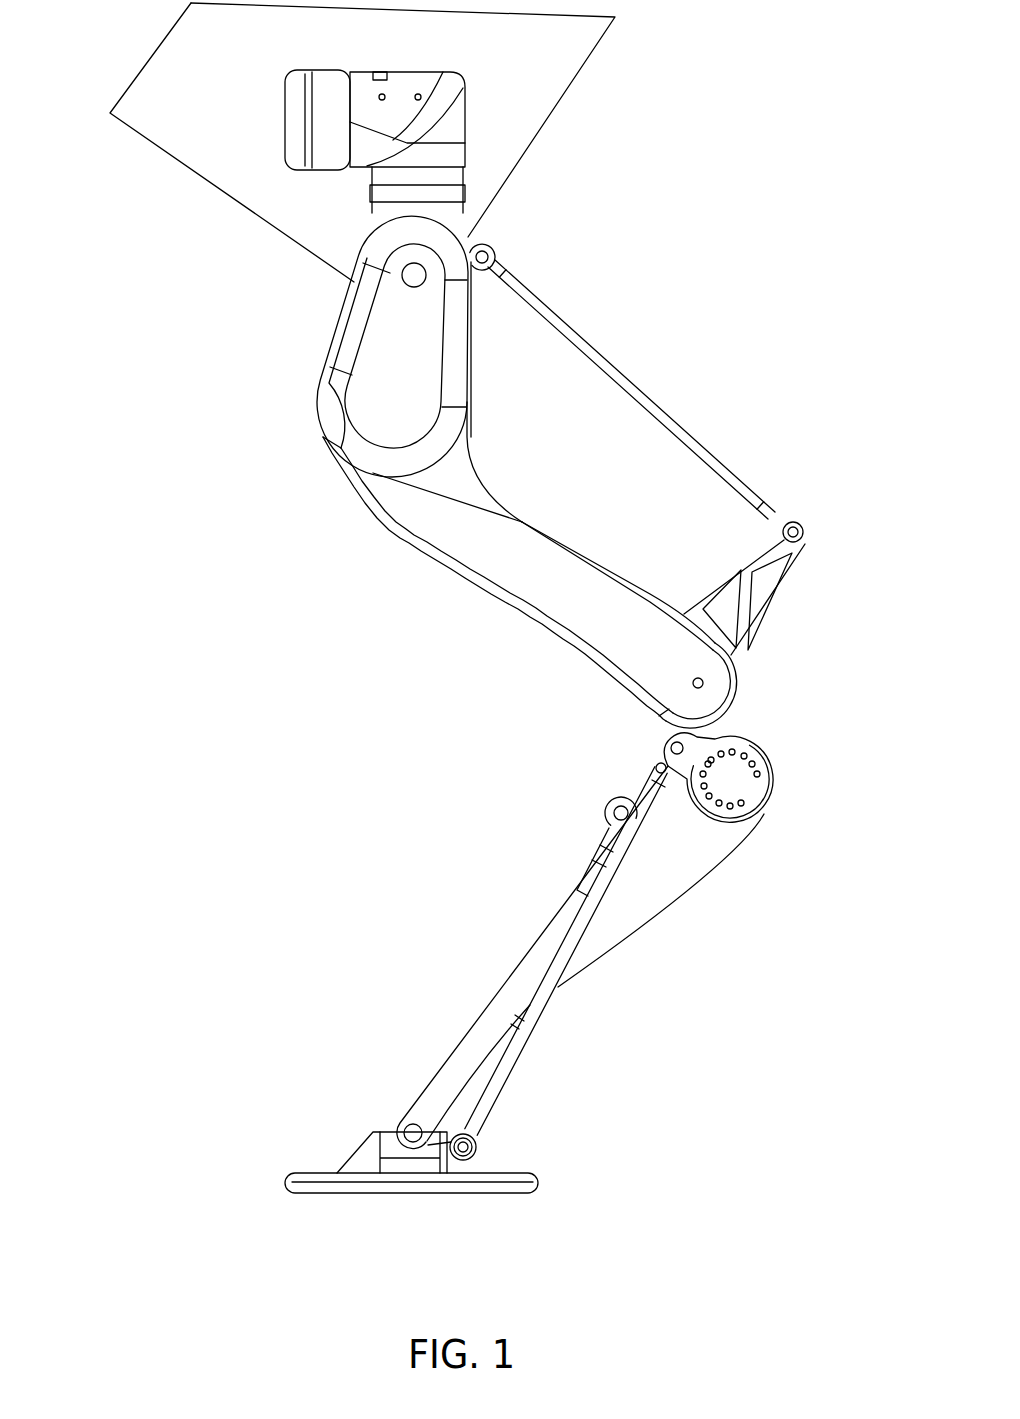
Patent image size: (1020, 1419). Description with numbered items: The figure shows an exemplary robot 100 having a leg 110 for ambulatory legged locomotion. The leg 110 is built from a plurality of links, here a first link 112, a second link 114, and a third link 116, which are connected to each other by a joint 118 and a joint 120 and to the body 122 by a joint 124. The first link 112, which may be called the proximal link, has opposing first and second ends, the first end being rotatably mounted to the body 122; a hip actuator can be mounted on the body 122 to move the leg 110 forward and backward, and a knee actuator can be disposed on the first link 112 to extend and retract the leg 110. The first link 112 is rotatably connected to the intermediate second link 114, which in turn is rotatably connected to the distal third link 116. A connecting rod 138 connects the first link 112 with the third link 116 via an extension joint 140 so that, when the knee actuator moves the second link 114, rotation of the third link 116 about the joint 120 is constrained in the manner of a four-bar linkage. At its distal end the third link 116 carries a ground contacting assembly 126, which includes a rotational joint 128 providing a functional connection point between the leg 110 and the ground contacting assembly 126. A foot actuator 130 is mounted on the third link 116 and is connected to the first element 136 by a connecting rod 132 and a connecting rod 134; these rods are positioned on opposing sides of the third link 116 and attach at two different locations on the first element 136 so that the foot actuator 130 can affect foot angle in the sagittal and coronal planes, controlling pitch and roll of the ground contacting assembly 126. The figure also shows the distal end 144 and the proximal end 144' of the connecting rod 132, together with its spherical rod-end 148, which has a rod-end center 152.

The robot 100 is at (735, 57).
The leg 110 is at (383, 585).
The first link 112 is at (357, 325).
The second link 114 is at (558, 615).
The third link 116 is at (663, 905).
The joint 118 is at (333, 438).
The joint 120 is at (742, 705).
The body 122 is at (148, 61).
The joint 124 is at (297, 145).
The ground contacting assembly 126 is at (338, 1143).
The rotational joint 128 is at (413, 1122).
The foot actuator 130 is at (737, 777).
The connecting rod 132 is at (530, 1042).
The connecting rod 134 is at (608, 838).
The first element 136 is at (480, 1160).
The connecting rod 138 is at (640, 386).
The extension joint 140 is at (783, 595).
The distal end 144 is at (526, 1145).
The proximal end 144' is at (618, 763).
The spherical rod-end 148 is at (474, 1146).
The rod-end center 152 is at (465, 1155).